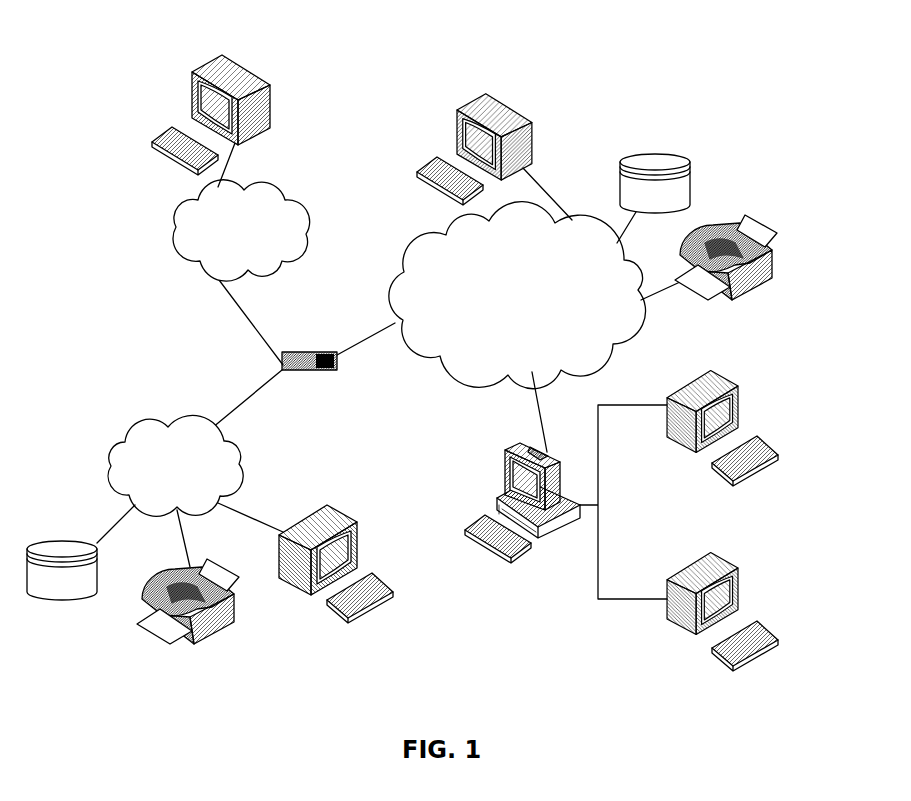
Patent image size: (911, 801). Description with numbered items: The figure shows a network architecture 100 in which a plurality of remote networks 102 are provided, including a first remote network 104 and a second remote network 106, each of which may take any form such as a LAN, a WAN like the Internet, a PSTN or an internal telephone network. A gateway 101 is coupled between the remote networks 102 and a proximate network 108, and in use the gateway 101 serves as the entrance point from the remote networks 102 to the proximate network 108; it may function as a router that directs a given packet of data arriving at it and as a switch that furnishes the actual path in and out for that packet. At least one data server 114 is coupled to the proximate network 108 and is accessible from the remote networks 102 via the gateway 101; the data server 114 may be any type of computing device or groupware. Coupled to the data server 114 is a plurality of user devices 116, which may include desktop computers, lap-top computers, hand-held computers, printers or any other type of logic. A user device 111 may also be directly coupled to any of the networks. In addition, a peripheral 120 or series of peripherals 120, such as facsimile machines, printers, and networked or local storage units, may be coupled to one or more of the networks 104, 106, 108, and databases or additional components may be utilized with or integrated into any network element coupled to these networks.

The network architecture 100 is at (140, 42).
The gateway 101 is at (292, 352).
The remote networks 102 is at (165, 275).
The first remote network 104 is at (112, 445).
The second remote network 106 is at (302, 203).
The proximate network 108 is at (608, 352).
The user device 111 is at (530, 120).
The data server 114 is at (505, 462).
The user devices 116 is at (268, 89).
The peripheral 120 is at (690, 163).